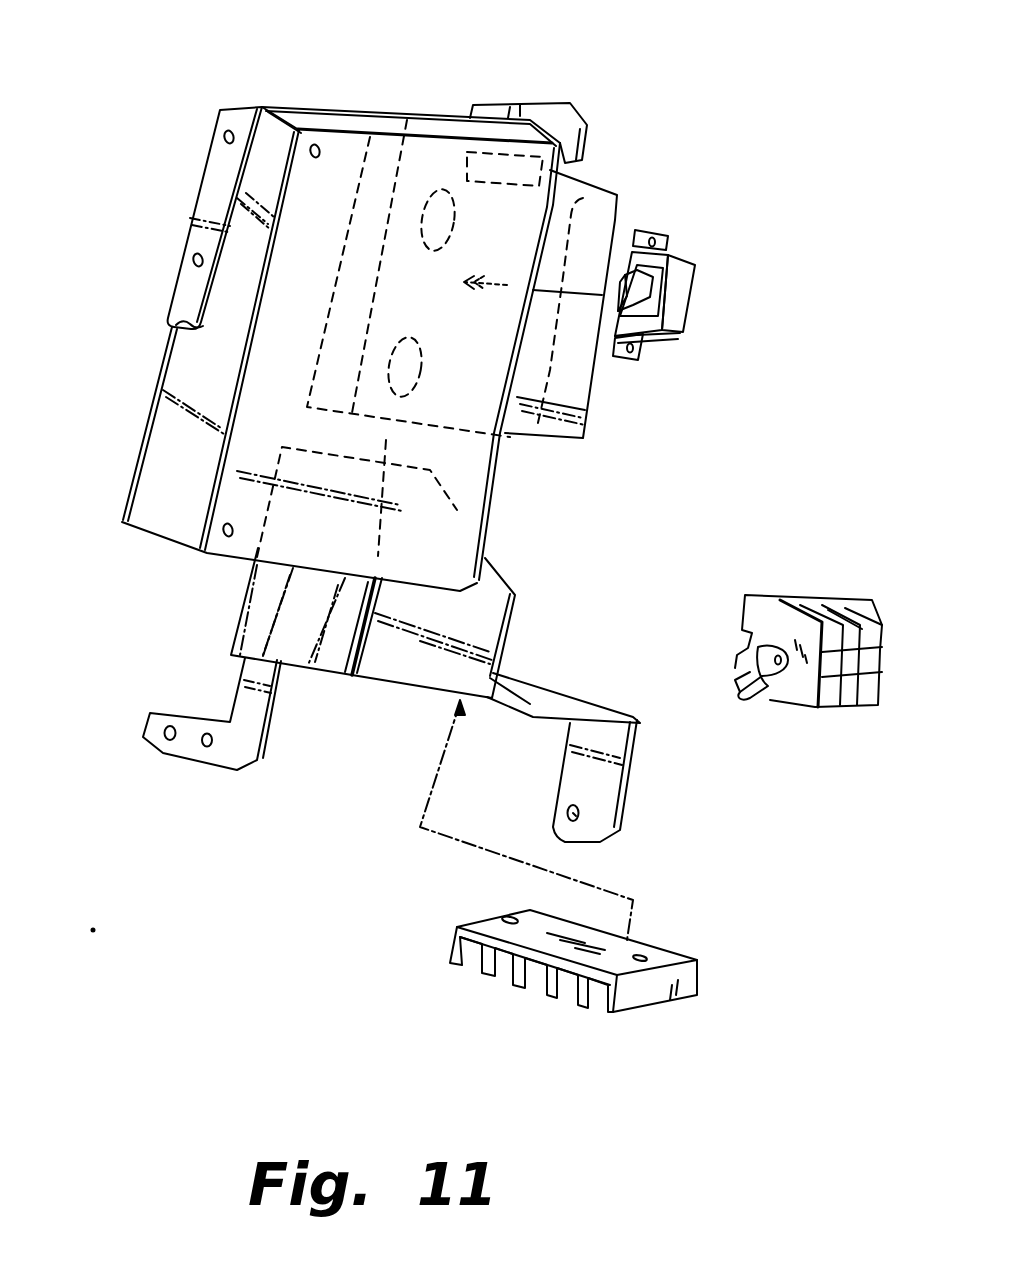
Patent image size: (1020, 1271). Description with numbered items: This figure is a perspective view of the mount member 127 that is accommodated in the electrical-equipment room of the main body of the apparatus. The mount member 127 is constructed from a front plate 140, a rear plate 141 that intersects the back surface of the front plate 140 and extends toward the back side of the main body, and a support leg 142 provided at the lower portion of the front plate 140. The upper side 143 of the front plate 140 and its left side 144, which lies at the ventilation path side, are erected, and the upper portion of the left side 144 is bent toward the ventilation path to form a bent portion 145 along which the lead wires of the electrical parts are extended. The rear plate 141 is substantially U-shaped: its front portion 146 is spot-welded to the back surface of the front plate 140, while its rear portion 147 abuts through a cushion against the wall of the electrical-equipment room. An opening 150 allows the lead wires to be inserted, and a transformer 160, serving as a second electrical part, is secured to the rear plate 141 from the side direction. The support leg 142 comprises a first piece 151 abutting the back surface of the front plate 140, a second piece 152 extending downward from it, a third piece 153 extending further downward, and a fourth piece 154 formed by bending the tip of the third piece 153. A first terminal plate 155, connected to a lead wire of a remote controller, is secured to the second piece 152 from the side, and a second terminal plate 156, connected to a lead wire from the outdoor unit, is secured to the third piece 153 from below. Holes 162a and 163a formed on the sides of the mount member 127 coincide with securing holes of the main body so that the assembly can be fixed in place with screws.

The mount member 127 is at (665, 525).
The front plate 140 is at (468, 456).
The rear plate 141 is at (580, 360).
The support leg 142 is at (345, 792).
The upper side 143 is at (373, 70).
The left side 144 is at (155, 422).
The bent portion 145 is at (213, 184).
The front portion 146 is at (407, 120).
The rear portion 147 is at (630, 225).
The opening 150 is at (452, 190).
The first piece 151 is at (334, 665).
The second piece 152 is at (400, 660).
The third piece 153 is at (492, 702).
The fourth piece 154 is at (577, 773).
The first terminal plate 155 is at (773, 607).
The second terminal plate 156 is at (480, 922).
The transformer 160 is at (695, 293).
The hole 162a is at (575, 825).
The hole 163a is at (168, 730).